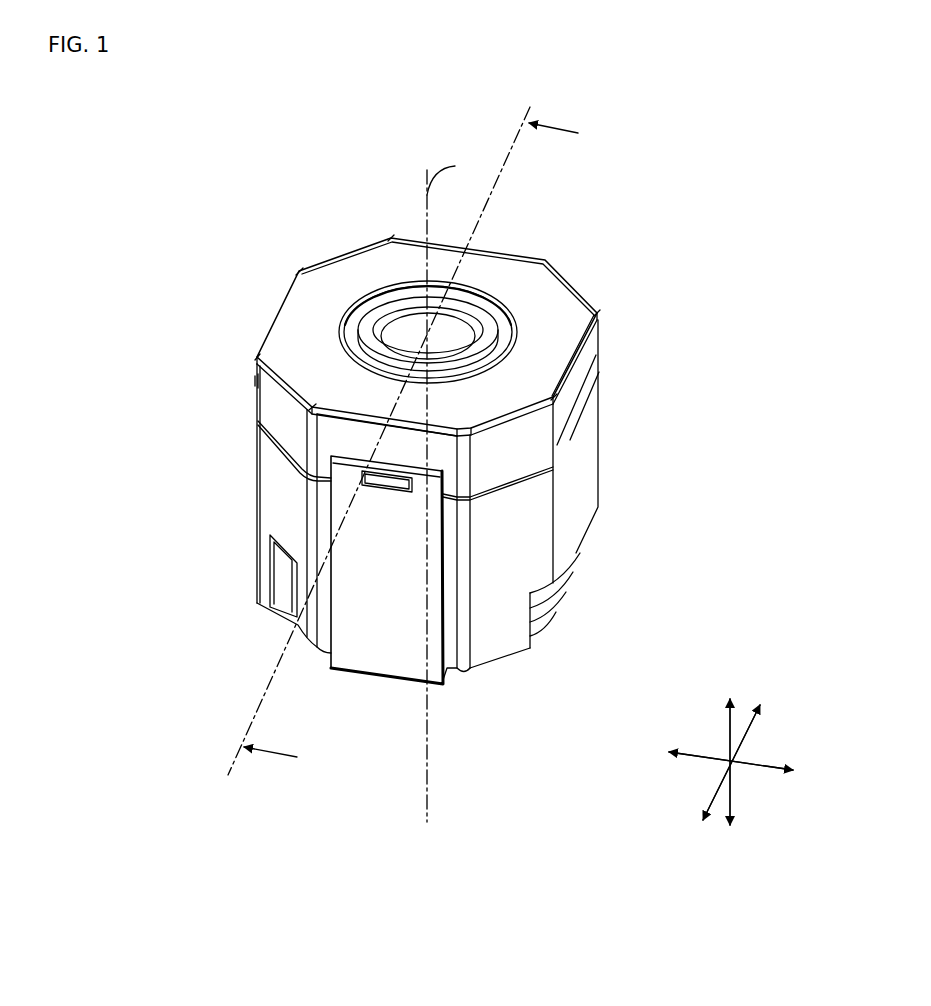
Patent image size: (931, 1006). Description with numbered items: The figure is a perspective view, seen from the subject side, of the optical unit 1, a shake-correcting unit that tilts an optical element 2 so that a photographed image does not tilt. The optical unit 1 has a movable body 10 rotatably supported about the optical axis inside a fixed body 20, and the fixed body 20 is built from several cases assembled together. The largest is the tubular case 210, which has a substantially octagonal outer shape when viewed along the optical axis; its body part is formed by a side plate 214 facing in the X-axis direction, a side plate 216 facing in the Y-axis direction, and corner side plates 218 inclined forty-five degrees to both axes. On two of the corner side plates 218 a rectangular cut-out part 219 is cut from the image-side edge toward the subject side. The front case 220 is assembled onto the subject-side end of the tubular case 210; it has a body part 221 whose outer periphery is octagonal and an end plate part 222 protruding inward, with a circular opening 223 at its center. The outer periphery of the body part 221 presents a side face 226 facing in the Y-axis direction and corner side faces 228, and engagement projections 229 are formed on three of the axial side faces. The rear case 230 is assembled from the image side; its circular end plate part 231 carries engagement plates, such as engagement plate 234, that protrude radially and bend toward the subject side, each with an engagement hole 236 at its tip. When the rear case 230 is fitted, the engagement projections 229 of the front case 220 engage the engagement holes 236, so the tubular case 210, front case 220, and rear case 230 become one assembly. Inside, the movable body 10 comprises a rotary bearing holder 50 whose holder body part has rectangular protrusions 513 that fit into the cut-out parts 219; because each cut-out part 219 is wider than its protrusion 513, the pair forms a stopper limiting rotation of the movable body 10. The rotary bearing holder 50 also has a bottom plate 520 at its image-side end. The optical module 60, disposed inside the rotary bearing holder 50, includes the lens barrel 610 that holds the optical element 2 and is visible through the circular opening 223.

The optical unit 1 is at (166, 178).
The optical element 2 is at (445, 325).
The movable body 10 is at (461, 292).
The fixed body 20 is at (391, 335).
The rotary bearing holder 50 is at (555, 600).
The optical module 60 is at (506, 327).
The tubular case 210 is at (243, 494).
The side plate 214 is at (595, 437).
The side plate 216 is at (450, 650).
The side plate 218 is at (263, 506).
The cut-out part 219 is at (275, 560).
The front case 220 is at (271, 286).
The body part 221 is at (263, 402).
The end plate part 222 is at (300, 318).
The circular opening 223 is at (372, 303).
The side face 226 is at (394, 459).
The side face 228 is at (263, 430).
The engagement projection 229 is at (256, 377).
The rear case 230 is at (476, 599).
The end plate part 231 is at (540, 640).
The engagement plate 234 is at (383, 663).
The engagement hole 236 is at (405, 494).
The protrusion 513 is at (277, 585).
The bottom plate 520 is at (578, 596).
The lens barrel 610 is at (483, 315).